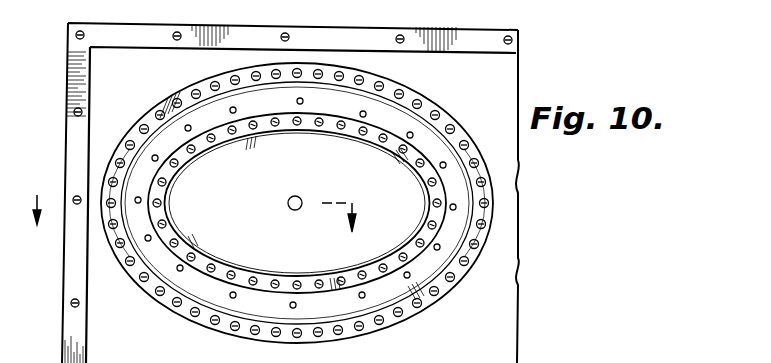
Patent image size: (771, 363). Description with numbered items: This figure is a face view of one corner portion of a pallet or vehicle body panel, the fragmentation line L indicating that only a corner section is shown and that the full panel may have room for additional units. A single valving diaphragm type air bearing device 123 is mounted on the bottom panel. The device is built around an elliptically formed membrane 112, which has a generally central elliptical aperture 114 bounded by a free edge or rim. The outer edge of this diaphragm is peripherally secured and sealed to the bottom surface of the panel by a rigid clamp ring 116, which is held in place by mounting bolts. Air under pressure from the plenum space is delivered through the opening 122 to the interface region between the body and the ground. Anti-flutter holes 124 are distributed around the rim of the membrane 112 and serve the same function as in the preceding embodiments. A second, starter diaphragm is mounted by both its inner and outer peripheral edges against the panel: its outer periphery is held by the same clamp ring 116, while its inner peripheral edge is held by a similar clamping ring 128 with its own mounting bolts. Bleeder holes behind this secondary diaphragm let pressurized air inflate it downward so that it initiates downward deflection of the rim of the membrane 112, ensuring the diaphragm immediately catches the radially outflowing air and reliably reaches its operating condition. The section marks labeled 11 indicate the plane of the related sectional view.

The elliptically formed membrane 112 is at (332, 98).
The central elliptical aperture 114 is at (387, 130).
The rigid clamp ring 116 is at (458, 124).
The opening 122 is at (300, 199).
The valving diaphragm type air bearing device 123 is at (250, 212).
The anti-flutter holes 124 is at (297, 99).
The clamping ring 128 is at (432, 212).
The fragmentation line L is at (522, 218).
The section line 11- 11 is at (194, 224).